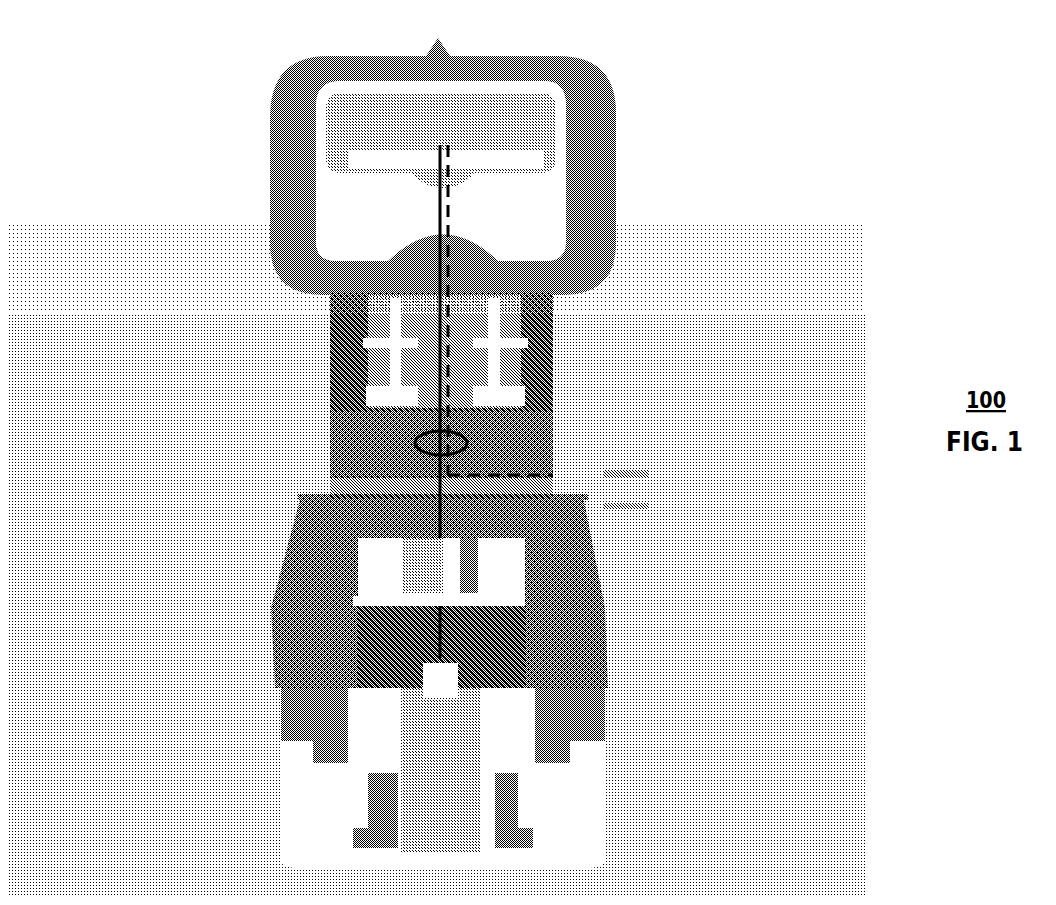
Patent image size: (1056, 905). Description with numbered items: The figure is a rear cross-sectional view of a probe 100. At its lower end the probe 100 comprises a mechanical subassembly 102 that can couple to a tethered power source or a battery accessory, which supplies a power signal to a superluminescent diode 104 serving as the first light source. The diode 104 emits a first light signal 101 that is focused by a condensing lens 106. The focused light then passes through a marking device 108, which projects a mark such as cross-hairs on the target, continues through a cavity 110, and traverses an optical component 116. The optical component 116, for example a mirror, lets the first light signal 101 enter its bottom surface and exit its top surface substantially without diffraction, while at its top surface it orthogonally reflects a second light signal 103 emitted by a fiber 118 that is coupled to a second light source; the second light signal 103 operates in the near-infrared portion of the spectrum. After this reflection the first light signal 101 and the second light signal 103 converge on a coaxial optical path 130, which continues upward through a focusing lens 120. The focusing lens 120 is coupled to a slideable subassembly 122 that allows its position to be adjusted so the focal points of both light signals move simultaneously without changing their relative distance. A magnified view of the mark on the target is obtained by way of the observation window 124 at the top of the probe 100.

The probe 100 is at (710, 123).
The first light signal 101 is at (355, 415).
The mechanical subassembly 102 is at (482, 852).
The second light signal 103 is at (452, 340).
The superluminescent diode 104 is at (443, 735).
The condensing lens 106 is at (452, 620).
The marking device 108 is at (352, 595).
The cavity 110 is at (417, 563).
The optical component 116 is at (412, 460).
The fiber 118 is at (598, 473).
The focusing lens 120 is at (410, 346).
The slideable subassembly 122 is at (480, 320).
The observation window 124 is at (425, 125).
The coaxial optical path 130 is at (457, 437).